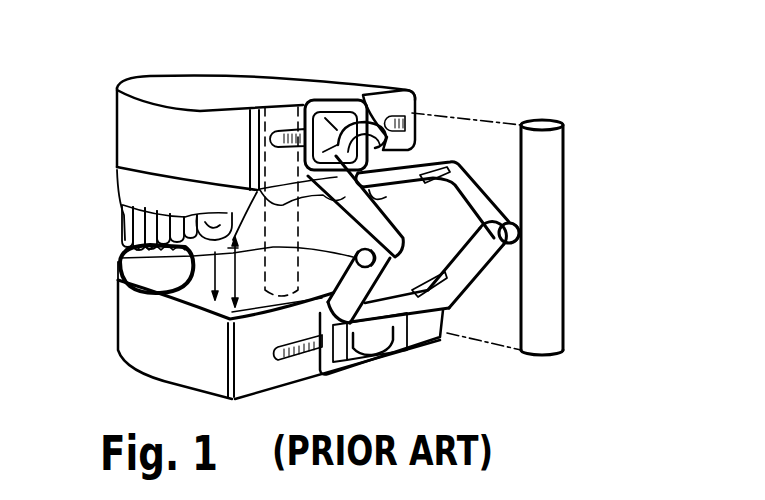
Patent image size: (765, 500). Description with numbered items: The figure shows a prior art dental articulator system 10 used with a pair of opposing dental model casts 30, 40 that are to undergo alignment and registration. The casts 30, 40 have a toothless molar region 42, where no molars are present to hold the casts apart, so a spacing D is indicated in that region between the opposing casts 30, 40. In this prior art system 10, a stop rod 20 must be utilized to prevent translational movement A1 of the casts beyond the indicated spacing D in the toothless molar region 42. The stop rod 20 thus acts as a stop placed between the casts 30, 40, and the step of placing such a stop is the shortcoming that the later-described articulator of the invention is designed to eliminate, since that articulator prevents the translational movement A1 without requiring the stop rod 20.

The prior art dental articulator system 10 is at (381, 158).
The stop rod 20 is at (546, 253).
The upper cast 30 is at (240, 88).
The lower cast 40 is at (143, 327).
The toothless molar region 42 is at (120, 276).
The translational movement A1 is at (233, 248).
The spacing D is at (228, 272).